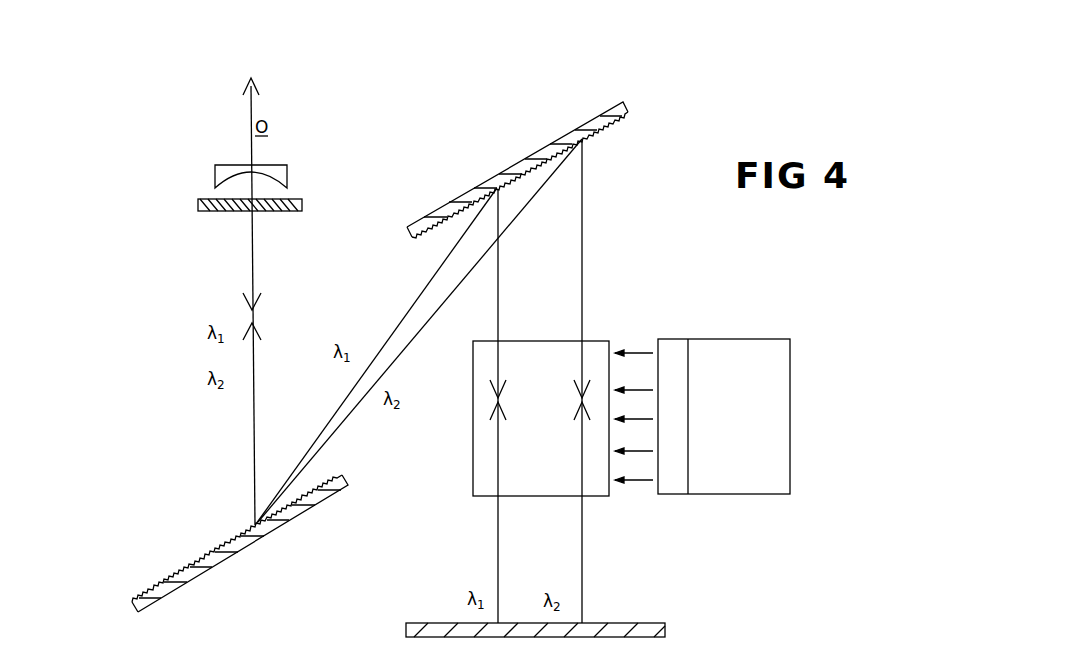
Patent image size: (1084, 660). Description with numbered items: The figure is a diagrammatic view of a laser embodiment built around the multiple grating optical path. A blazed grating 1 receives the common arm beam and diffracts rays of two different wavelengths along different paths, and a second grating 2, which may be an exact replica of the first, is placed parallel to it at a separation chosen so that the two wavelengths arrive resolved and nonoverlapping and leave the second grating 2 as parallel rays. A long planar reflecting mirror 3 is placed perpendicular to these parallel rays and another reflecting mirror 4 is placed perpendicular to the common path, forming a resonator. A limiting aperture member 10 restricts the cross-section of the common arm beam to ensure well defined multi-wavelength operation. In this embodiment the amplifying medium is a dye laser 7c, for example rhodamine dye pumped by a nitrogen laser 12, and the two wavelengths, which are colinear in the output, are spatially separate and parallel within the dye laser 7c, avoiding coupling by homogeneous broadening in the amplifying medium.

The grating 1 is at (150, 588).
The second grating 2 is at (609, 112).
The long planar reflecting mirror 3 is at (653, 620).
The reflecting mirror 4 is at (215, 176).
The limiting aperture member 10 is at (198, 203).
The dye laser 7c is at (473, 447).
The nitrogen laser 12 is at (790, 443).